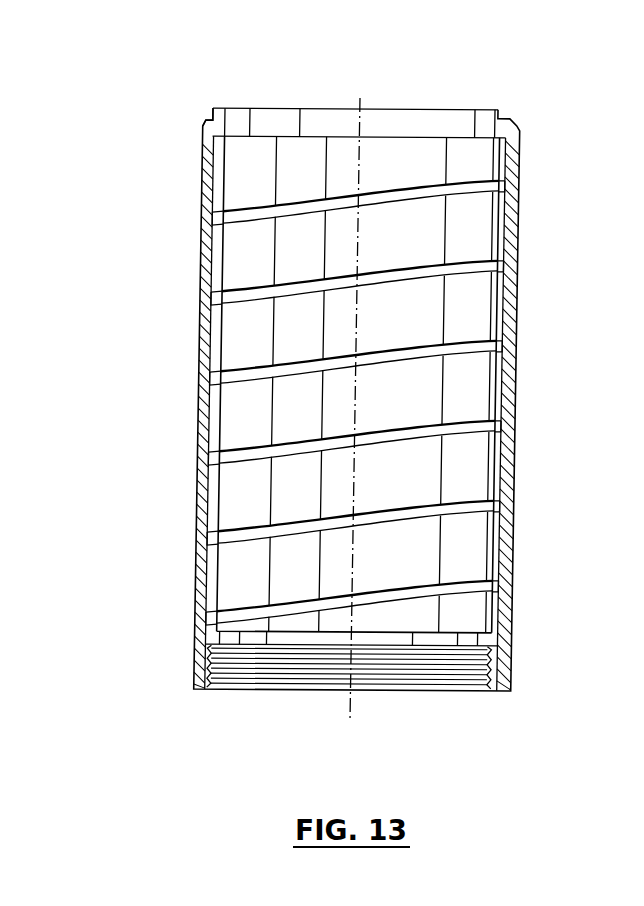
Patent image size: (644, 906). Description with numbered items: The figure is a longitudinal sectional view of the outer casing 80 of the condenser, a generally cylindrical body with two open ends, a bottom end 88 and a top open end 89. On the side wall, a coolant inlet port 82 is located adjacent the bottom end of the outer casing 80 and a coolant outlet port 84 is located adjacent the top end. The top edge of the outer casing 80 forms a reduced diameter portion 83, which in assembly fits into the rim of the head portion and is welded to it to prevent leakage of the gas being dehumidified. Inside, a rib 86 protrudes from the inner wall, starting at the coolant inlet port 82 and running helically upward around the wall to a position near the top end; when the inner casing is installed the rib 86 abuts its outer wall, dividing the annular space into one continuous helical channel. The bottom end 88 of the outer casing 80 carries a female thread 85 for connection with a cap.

The outer casing 80 is at (518, 376).
The coolant inlet port 82 is at (208, 614).
The reduced diameter portion 83 is at (212, 109).
The coolant outlet port 84 is at (232, 162).
The female thread 85 is at (194, 663).
The rib 86 is at (250, 367).
The bottom end 88 is at (320, 692).
The open end 89 is at (408, 109).